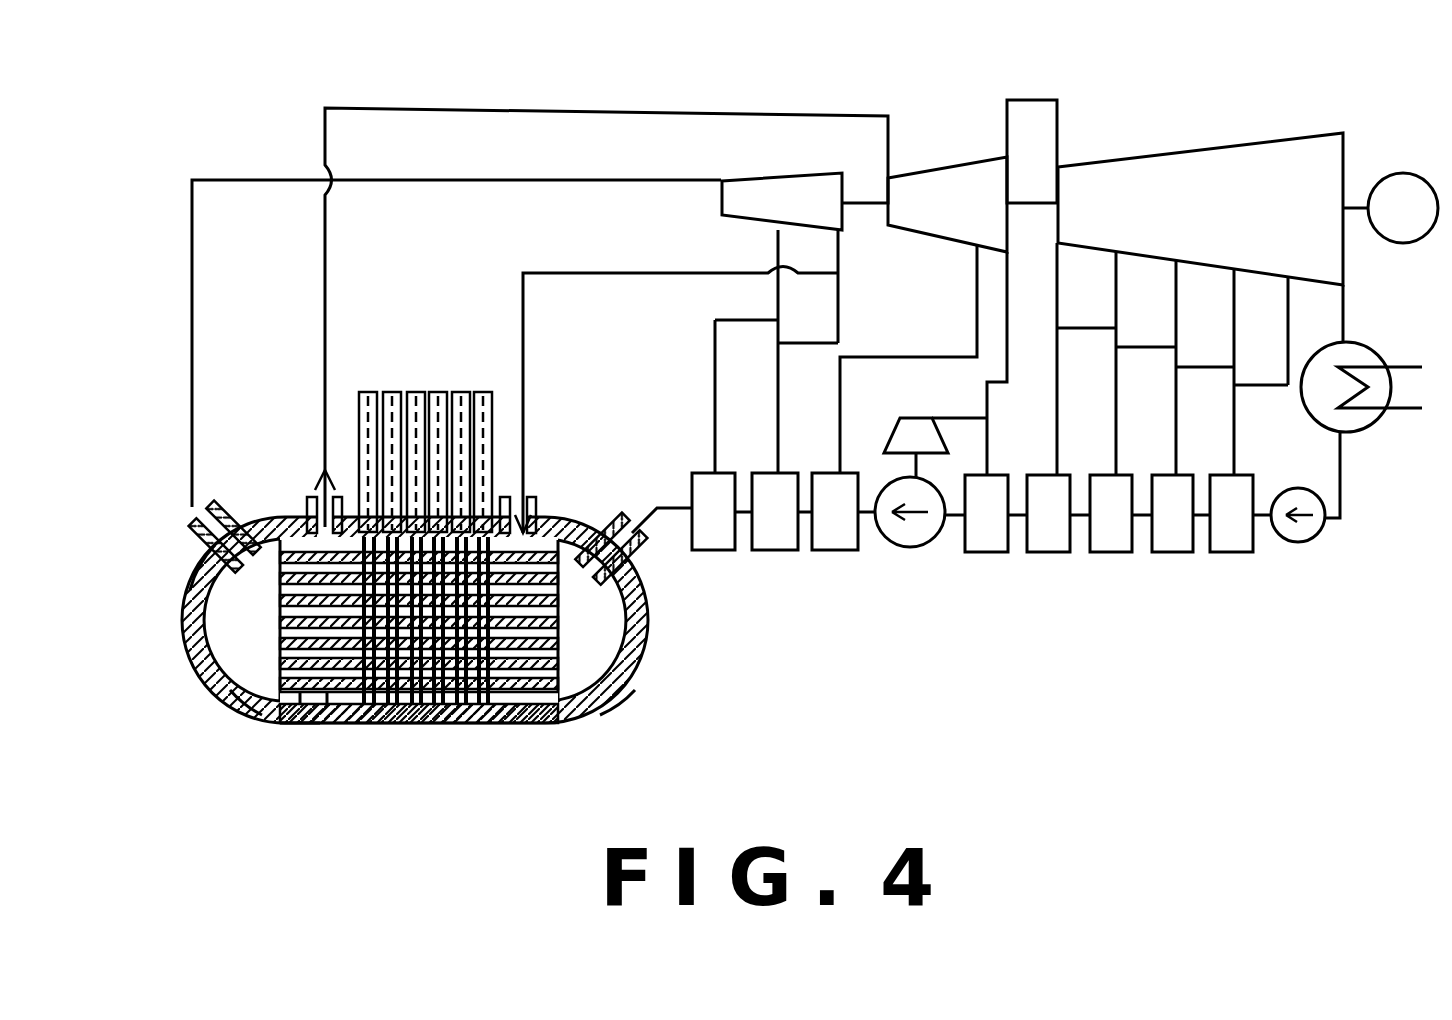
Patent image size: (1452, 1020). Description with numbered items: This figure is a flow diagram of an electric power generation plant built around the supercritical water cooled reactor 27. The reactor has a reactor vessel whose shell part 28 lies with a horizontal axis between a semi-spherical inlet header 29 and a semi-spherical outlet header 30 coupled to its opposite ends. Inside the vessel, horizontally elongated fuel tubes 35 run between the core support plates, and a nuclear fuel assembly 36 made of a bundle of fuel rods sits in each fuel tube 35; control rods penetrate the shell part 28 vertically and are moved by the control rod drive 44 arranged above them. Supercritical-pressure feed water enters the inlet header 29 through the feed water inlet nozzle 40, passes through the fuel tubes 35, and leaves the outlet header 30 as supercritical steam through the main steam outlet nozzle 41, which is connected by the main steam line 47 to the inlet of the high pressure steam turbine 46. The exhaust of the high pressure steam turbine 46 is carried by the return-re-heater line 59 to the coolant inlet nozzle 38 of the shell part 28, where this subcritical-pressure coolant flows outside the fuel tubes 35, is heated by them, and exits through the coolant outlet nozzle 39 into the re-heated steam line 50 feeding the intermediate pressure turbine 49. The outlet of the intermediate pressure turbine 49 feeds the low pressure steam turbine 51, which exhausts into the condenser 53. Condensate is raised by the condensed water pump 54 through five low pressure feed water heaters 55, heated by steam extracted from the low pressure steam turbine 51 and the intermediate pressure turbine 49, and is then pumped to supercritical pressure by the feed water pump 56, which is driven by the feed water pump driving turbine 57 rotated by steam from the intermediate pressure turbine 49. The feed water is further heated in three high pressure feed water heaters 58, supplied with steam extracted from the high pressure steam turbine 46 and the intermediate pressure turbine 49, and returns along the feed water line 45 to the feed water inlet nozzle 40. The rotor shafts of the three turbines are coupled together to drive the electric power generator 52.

The supercritical water cooled reactor 27 is at (477, 730).
The shell part 28 is at (388, 722).
The inlet header 29 is at (630, 670).
The outlet header 30 is at (196, 665).
The fuel tube 35 is at (300, 730).
The nuclear fuel assembly 36 is at (327, 712).
The coolant inlet nozzle 38 is at (535, 500).
The coolant outlet nozzle 39 is at (305, 500).
The feed water inlet nozzle 40 is at (637, 550).
The main steam outlet nozzle 41 is at (187, 532).
The control rod drive 44 is at (436, 390).
The feed water line 45 is at (677, 505).
The high pressure steam turbine 46 is at (777, 183).
The main steam line 47 is at (243, 178).
The intermediate pressure turbine 49 is at (952, 178).
The re-heated steam line 50 is at (585, 108).
The low pressure steam turbine 51 is at (1165, 178).
The electric power generator 52 is at (1403, 174).
The condenser 53 is at (1377, 424).
The condensed water pump 54 is at (1300, 542).
The low pressure feed water heaters 55 is at (990, 553).
The feed water pump 56 is at (930, 545).
The feed water pump driving turbine 57 is at (916, 418).
The high pressure feed water heaters 58 is at (715, 551).
The return-re-heater line 59 is at (520, 328).